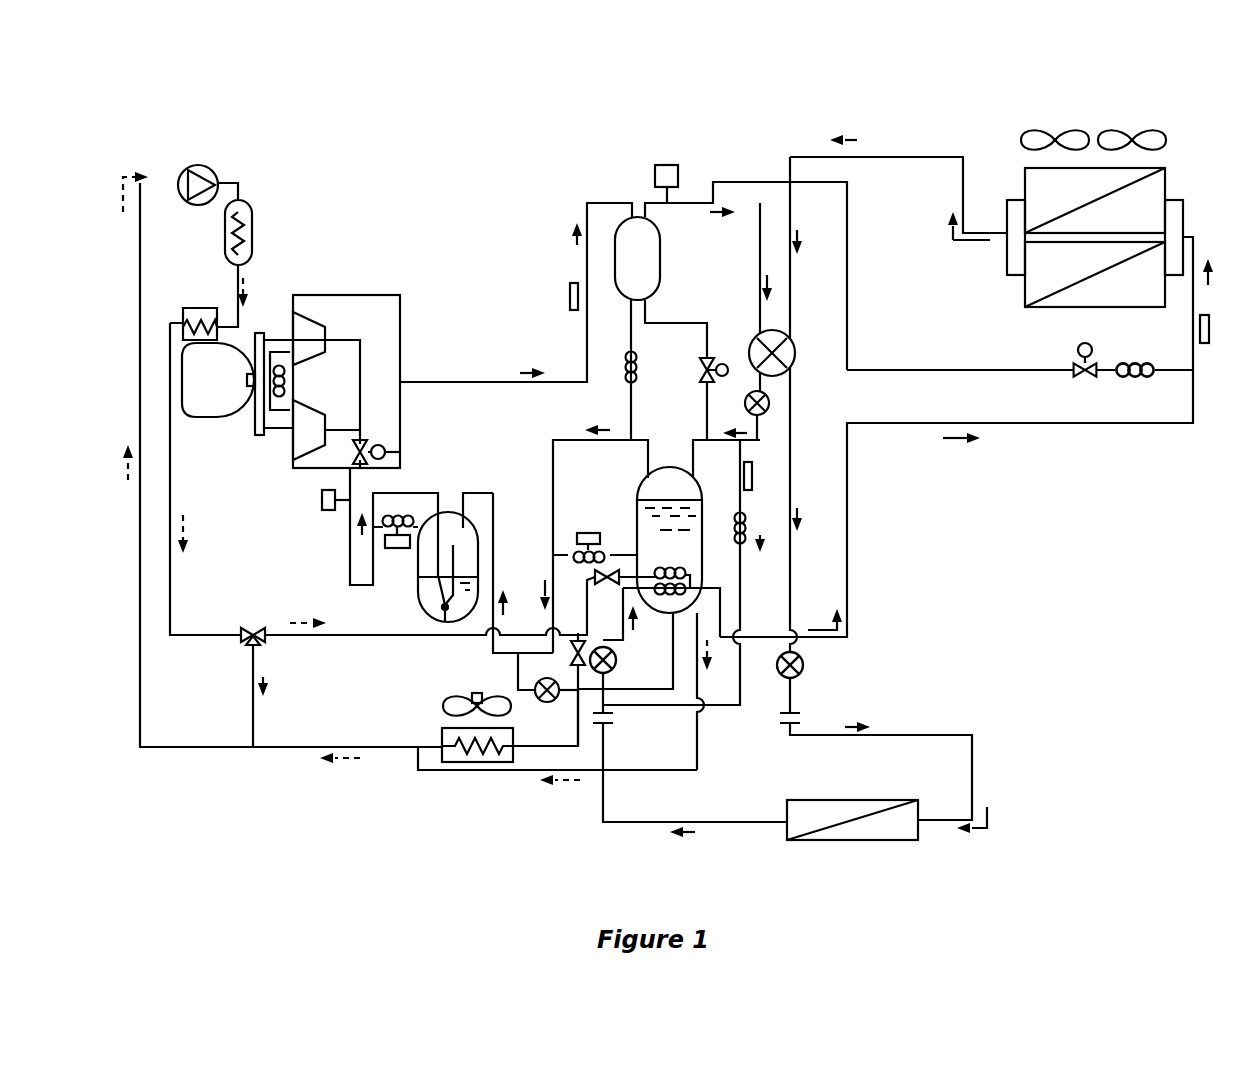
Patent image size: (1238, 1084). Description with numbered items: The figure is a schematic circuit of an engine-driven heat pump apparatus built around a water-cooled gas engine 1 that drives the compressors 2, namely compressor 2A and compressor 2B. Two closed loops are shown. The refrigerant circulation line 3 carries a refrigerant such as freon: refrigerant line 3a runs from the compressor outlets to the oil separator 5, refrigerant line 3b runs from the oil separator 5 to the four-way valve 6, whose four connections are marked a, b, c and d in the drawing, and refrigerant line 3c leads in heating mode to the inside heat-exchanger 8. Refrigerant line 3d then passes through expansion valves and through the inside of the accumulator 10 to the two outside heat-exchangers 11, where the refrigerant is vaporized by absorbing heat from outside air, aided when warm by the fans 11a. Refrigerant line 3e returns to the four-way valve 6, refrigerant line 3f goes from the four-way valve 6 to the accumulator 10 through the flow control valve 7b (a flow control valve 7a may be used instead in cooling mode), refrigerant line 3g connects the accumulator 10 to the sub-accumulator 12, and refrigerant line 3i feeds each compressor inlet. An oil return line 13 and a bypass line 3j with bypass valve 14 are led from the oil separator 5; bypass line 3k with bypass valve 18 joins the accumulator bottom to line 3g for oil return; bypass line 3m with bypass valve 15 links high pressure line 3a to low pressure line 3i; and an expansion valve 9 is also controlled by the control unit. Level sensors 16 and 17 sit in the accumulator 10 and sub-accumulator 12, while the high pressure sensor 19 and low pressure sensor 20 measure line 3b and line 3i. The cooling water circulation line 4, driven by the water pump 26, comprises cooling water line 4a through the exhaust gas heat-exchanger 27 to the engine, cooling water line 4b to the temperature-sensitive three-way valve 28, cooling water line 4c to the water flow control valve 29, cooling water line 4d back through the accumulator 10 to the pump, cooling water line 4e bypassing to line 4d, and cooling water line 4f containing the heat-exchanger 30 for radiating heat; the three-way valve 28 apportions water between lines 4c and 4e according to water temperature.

The water-cooled gas engine 1 is at (218, 420).
The compressors 2 is at (277, 302).
The compressor 2A is at (327, 328).
The compressor 2B is at (308, 420).
The refrigerant circulation line 3 is at (495, 328).
The refrigerant line 3a is at (455, 380).
The refrigerant line 3b is at (700, 200).
The refrigerant line 3c is at (928, 735).
The refrigerant line 3d is at (848, 558).
The refrigerant line 3e is at (885, 157).
The refrigerant line 3f is at (757, 432).
The refrigerant line 3g is at (553, 478).
The refrigerant line 3i is at (350, 538).
The bypass line 3j is at (706, 410).
The bypass line 3k is at (660, 705).
The bypass line 3m is at (400, 428).
The cooling water circulation line 4 is at (210, 779).
The cooling water line 4a is at (237, 283).
The cooling water line 4b is at (170, 578).
The cooling water line 4c is at (372, 637).
The cooling water line 4d is at (398, 750).
The cooling water line 4e is at (253, 695).
The cooling water line 4f is at (578, 750).
The oil separator 5 is at (660, 265).
The four-way valve 6 is at (795, 355).
The flow control valve 7a is at (805, 665).
The flow control valve 7b is at (770, 403).
The inside heat-exchanger 8 is at (872, 840).
The expansion valve 9 is at (679, 735).
The accumulator 10 is at (637, 480).
The outside heat-exchangers 11 is at (1025, 178).
The fans 11a is at (1150, 130).
The sub-accumulator 12 is at (478, 557).
The oil return line 13 is at (627, 418).
The bypass valve 14 is at (700, 372).
The bypass valve 15 is at (400, 453).
The level sensor 16 is at (592, 533).
The level sensor 17 is at (397, 548).
The bypass valve 18 is at (535, 685).
The high pressure sensor 19 is at (666, 165).
The low pressure sensor 20 is at (322, 500).
The water pump 26 is at (212, 170).
The exhaust gas heat-exchanger 27 is at (252, 232).
The temperature-sensitive three-way valve 28 is at (253, 627).
The water flow control valve 29 is at (592, 590).
The heat-exchanger 30 is at (482, 762).
The valve port a is at (760, 345).
The valve port b is at (790, 340).
The valve port c is at (793, 366).
The valve port d is at (757, 378).